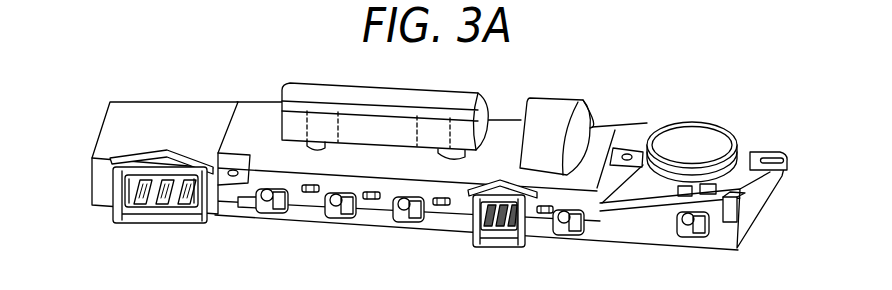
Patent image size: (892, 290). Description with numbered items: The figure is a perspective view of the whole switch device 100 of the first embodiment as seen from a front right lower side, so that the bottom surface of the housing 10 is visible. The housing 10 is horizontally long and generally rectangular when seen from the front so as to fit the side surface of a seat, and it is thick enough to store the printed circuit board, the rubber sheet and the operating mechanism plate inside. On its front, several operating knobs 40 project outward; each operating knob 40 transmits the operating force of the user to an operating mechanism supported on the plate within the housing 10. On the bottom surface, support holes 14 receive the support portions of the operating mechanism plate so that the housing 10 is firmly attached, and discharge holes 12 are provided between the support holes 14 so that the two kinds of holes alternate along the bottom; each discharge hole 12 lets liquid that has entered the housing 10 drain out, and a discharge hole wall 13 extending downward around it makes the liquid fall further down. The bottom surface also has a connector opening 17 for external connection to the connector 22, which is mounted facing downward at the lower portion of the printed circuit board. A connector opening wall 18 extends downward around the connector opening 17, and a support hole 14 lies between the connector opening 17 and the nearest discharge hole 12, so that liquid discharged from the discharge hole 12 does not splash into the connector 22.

The switch device 100 is at (177, 83).
The housing 10 is at (241, 103).
The discharge hole 12 is at (275, 207).
The discharge hole wall 13 is at (254, 209).
The support hole 14 is at (306, 196).
The connector opening 17 is at (150, 210).
The connector opening wall 18 is at (127, 222).
The connector 22 is at (160, 216).
The operating knob 40 is at (465, 94).